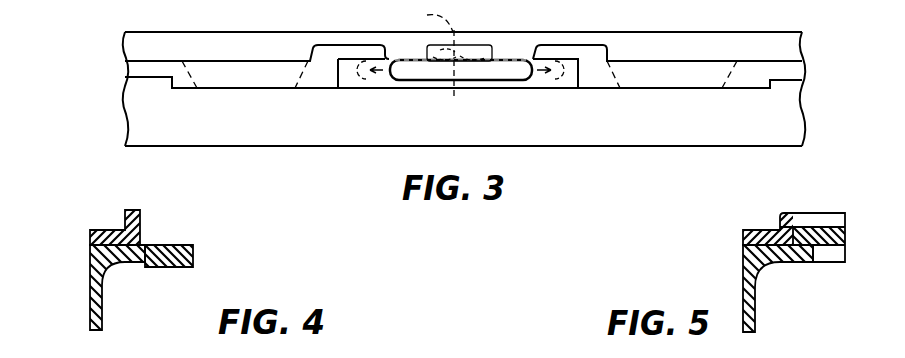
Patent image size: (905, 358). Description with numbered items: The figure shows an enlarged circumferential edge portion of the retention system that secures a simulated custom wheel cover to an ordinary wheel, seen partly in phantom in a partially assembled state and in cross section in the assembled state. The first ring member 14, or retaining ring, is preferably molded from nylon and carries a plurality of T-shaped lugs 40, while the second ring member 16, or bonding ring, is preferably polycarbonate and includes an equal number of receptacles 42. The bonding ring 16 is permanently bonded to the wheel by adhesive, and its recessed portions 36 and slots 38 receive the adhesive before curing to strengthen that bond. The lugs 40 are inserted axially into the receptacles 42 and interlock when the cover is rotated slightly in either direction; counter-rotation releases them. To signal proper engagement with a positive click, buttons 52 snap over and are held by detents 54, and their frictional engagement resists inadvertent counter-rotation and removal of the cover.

In FIG. 4, the first ring member 14 is at (90, 232).
In FIG. 5, the first ring member 14 is at (743, 236).
In FIG. 4, the second ring member 16 is at (90, 284).
In FIG. 5, the second ring member 16 is at (755, 299).
In FIG. 3, the recessed portions 36 is at (787, 82).
In FIG. 3, the slots 38 is at (680, 78).
In FIG. 4, the slots 38 is at (157, 250).
In FIG. 3, the T-shaped lugs 40 is at (476, 45).
In FIG. 3, the receptacles 42 is at (499, 88).
In FIG. 3, the buttons 52 is at (454, 96).
In FIG. 3, the detents 54 is at (425, 20).